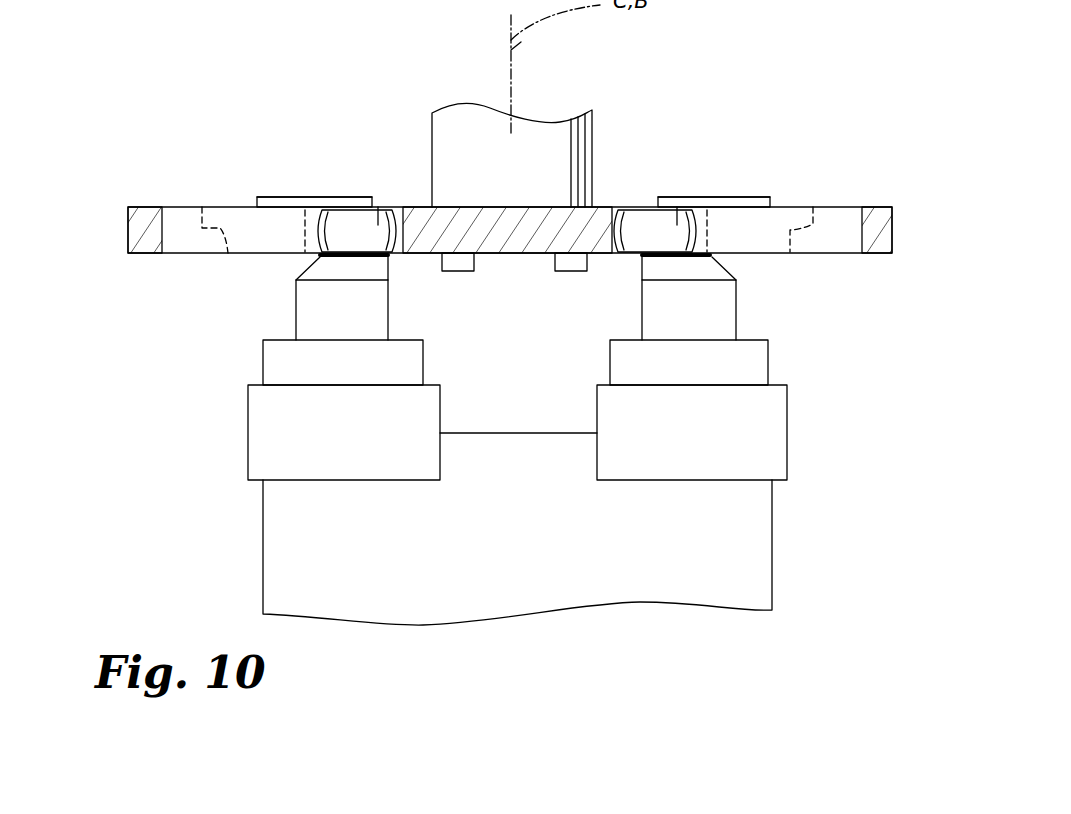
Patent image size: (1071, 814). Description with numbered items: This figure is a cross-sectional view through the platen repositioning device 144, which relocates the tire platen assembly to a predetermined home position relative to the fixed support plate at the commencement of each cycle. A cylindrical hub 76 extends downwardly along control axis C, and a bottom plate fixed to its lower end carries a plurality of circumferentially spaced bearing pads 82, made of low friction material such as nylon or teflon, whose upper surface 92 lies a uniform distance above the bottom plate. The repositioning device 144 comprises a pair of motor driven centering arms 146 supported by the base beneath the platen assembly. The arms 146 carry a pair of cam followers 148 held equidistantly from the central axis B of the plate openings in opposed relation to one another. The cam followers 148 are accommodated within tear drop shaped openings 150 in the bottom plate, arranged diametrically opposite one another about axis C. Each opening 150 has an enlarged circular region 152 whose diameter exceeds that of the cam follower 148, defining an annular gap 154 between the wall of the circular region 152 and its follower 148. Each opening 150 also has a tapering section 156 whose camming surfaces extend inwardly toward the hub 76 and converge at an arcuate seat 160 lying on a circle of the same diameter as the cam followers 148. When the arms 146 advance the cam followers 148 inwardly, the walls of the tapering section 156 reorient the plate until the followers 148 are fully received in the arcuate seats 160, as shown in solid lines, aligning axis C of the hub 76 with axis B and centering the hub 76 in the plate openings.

The cylindrical hub 76 is at (557, 130).
The bearing pads 82 is at (356, 197).
The upper surface of the bearing pads 92 is at (290, 197).
The platen repositioning device 144 is at (263, 372).
The centering arms 146 is at (383, 287).
The cam followers 148 is at (202, 207).
The tear drop shaped openings 150 is at (195, 255).
The enlarged circular region 152 is at (178, 207).
The annular gap 154 is at (170, 245).
The tapering section 156 is at (307, 240).
The arcuate seat 160 is at (388, 207).